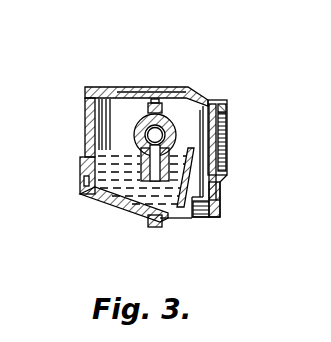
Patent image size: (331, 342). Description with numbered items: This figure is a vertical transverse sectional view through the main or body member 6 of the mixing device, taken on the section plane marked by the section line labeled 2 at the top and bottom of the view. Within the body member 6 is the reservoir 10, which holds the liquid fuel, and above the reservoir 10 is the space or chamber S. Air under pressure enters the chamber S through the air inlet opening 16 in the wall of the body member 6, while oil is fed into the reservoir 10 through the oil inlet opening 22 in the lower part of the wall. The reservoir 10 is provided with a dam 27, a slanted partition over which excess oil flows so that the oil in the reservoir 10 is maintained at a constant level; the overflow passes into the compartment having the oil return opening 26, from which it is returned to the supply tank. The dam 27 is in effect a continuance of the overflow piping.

The main or body member 6 is at (102, 88).
The air inlet opening 16 is at (85, 105).
The oil inlet opening 22 is at (82, 182).
The reservoir 10 is at (142, 180).
The space or chamber S is at (118, 130).
The dam 27 is at (205, 184).
The oil return opening 26 is at (193, 219).
The nozzle 2 is at (155, 87).